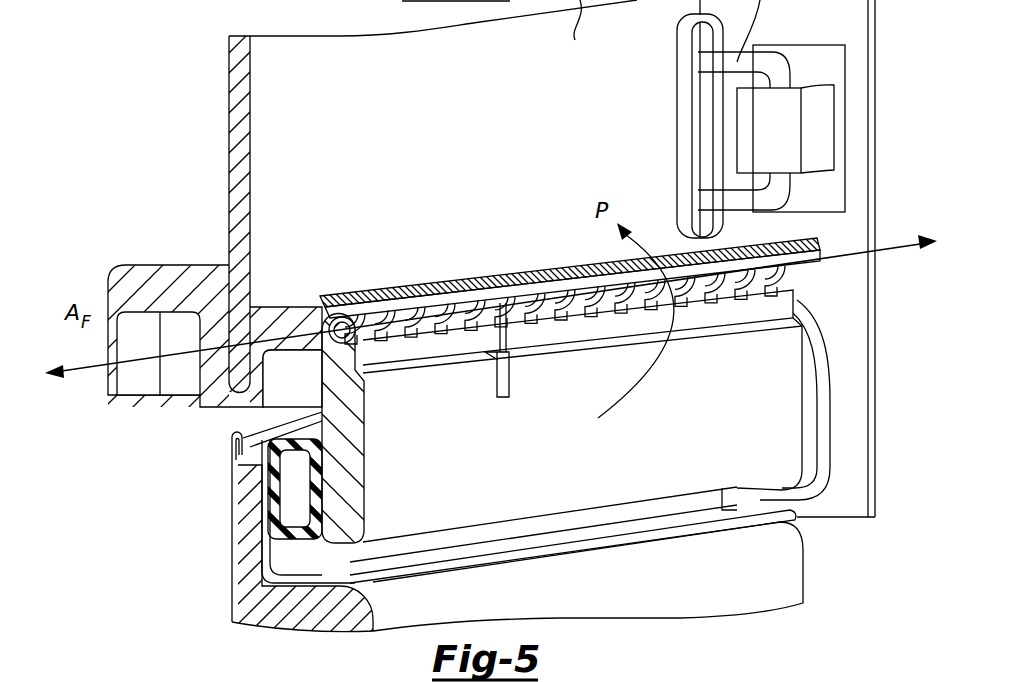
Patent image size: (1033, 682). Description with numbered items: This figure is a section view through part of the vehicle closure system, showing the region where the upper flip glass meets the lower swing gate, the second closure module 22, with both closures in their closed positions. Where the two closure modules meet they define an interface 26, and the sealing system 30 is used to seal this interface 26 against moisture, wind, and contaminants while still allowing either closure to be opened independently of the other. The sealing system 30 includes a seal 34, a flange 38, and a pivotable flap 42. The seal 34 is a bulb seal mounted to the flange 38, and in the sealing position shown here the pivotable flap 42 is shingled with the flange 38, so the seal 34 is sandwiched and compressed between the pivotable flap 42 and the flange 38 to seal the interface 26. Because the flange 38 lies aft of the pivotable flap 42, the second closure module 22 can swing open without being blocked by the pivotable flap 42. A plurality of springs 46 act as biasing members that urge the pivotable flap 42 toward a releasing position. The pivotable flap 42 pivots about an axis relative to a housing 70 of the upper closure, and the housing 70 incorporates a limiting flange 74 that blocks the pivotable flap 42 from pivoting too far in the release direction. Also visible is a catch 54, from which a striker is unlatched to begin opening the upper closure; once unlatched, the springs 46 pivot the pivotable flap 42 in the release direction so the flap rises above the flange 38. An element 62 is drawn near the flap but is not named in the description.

The second closure module 22 is at (768, 575).
The interface 26 is at (248, 482).
The sealing system 30 is at (232, 414).
The seal 34 is at (275, 497).
The flange 38 is at (262, 430).
The pivotable flap 42 is at (760, 372).
The springs 46 is at (477, 268).
The catch 54 is at (815, 118).
The bumper 62 is at (823, 425).
The housing 70 is at (397, 292).
The limiting flange 74 is at (530, 293).